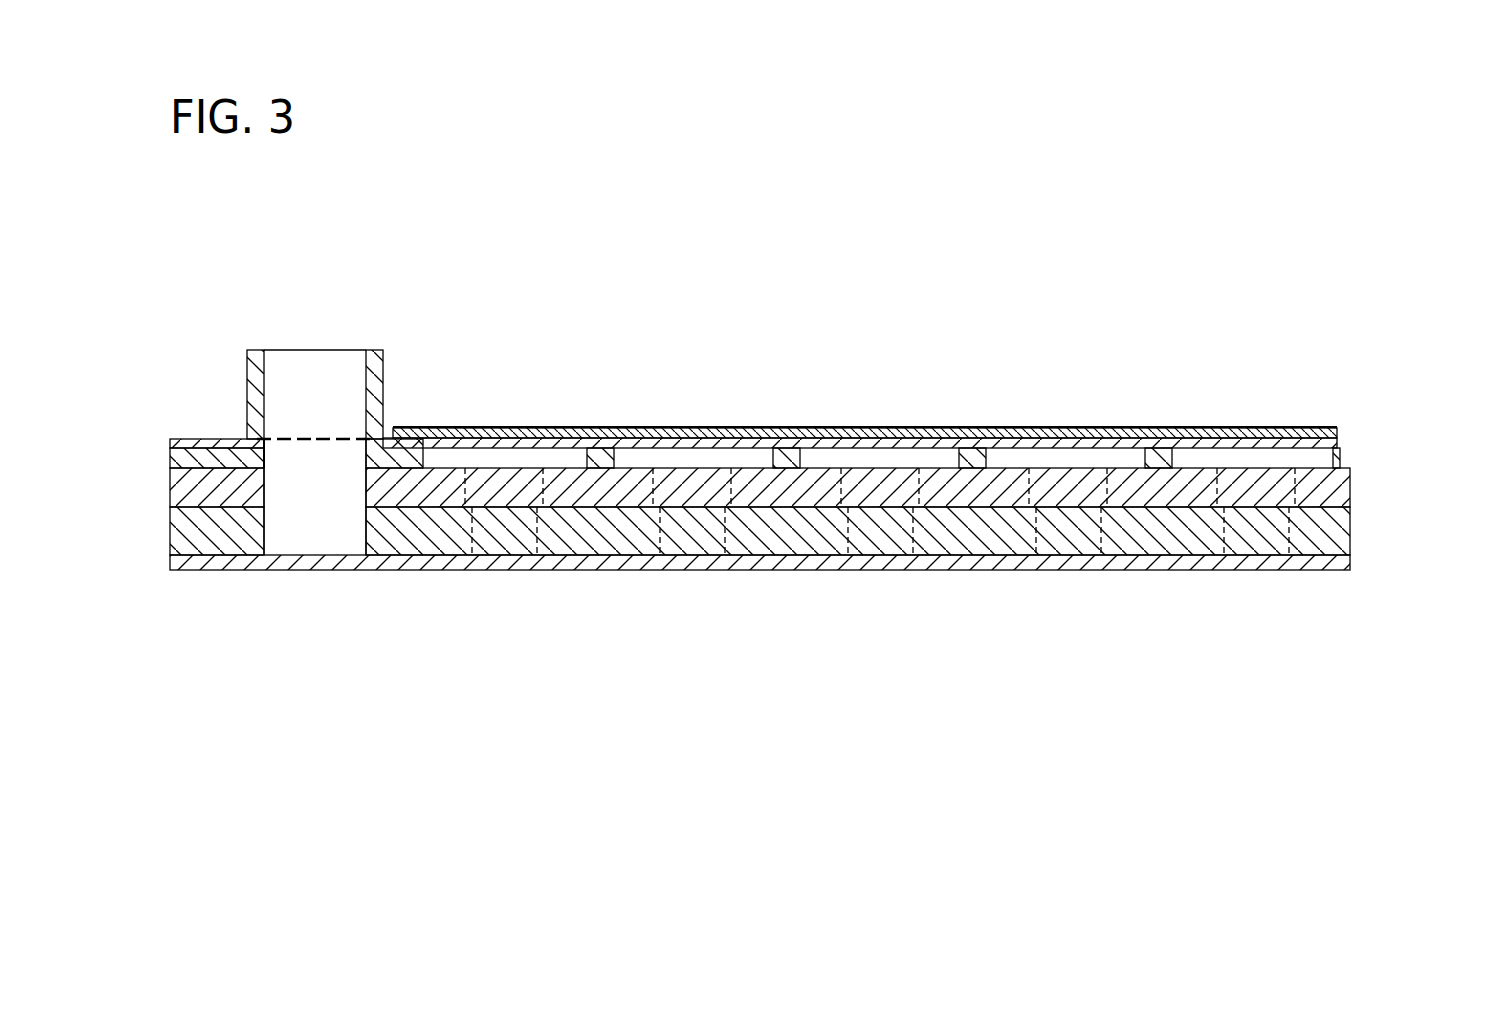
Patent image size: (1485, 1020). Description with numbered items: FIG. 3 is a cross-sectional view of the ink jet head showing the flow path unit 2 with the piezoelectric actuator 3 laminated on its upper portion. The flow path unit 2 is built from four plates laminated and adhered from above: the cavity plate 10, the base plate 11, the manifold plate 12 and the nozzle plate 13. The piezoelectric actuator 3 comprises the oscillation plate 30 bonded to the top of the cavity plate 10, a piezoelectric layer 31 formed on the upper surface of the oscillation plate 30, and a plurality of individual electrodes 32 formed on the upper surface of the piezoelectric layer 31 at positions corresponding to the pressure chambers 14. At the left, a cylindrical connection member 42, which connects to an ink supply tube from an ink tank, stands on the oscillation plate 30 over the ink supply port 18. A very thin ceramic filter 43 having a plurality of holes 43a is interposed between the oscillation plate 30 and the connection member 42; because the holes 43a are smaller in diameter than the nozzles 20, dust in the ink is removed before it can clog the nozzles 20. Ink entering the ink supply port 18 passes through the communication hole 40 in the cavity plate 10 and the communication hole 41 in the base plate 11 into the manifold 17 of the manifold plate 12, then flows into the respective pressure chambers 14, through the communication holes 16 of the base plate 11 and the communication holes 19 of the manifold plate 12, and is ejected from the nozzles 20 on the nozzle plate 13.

The flow path unit 2 is at (811, 488).
The piezoelectric actuator 3 is at (901, 371).
The cavity plate 10 is at (1344, 450).
The base plate 11 is at (1355, 490).
The manifold plate 12 is at (1355, 527).
The nozzle plate 13 is at (1355, 565).
The pressure chambers 14 is at (617, 447).
The communication holes 16 is at (620, 558).
The manifold 17 is at (266, 540).
The ink supply port 18 is at (265, 436).
The communication holes 19 is at (660, 560).
The nozzles 20 is at (694, 560).
The oscillation plate 30 is at (1342, 438).
The piezoelectric layer 31 is at (1338, 428).
The individual electrodes 32 is at (900, 427).
The communication hole 40 is at (265, 457).
The communication hole 41 is at (268, 487).
The connection member 42 is at (381, 372).
The filter 43 is at (336, 438).
The holes 43a is at (307, 438).